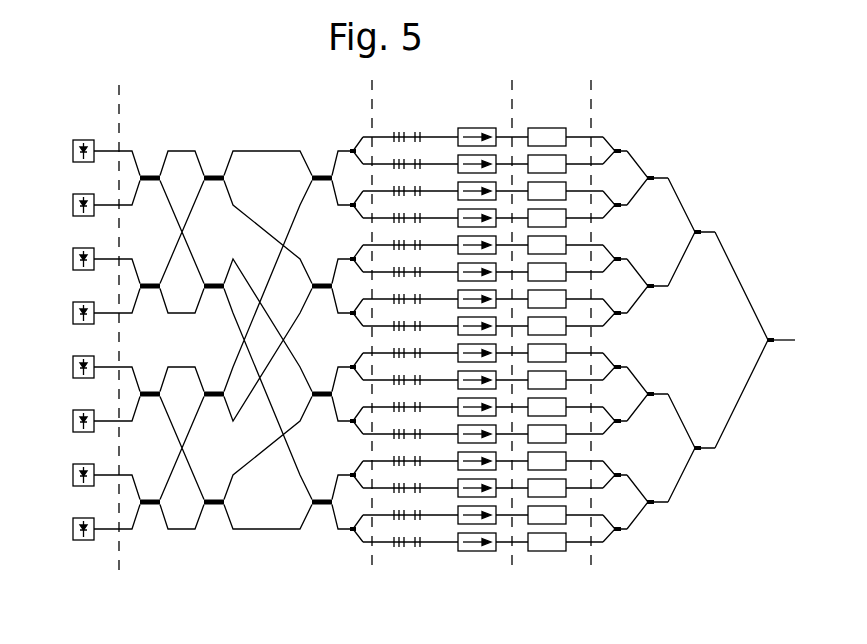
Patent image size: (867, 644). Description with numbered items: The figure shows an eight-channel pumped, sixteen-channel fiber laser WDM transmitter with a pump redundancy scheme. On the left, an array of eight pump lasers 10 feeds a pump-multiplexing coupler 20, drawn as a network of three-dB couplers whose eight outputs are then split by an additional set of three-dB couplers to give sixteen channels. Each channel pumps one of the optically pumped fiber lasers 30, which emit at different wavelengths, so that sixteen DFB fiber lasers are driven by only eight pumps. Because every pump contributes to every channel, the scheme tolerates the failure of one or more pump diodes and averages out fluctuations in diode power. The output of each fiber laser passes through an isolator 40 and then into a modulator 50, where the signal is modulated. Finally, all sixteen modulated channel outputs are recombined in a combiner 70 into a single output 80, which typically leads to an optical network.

The pump lasers 10 is at (83, 541).
The coupler 20 is at (266, 552).
The optically pumped fiber lasers 30 is at (402, 548).
The isolators 40 is at (473, 551).
The modulators 50 is at (562, 551).
The combiner 70 is at (688, 516).
The output 80 is at (786, 342).